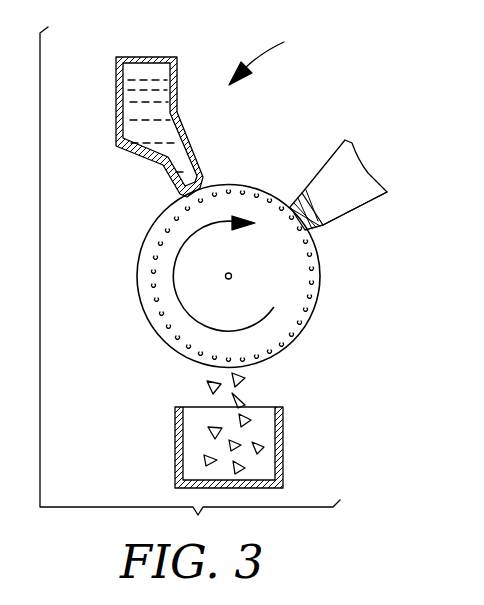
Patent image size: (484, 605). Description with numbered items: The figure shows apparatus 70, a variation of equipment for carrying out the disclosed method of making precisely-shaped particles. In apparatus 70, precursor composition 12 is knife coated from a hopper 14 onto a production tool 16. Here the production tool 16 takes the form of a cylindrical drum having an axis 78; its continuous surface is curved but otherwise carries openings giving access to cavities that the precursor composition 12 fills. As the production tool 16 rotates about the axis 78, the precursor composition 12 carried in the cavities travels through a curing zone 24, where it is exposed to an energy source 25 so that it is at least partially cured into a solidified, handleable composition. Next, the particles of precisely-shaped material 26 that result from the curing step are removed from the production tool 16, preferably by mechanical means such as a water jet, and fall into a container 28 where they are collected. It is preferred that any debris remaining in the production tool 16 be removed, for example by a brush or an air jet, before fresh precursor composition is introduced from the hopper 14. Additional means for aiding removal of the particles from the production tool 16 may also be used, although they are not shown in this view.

The precursor composition 12 is at (142, 72).
The hopper 14 is at (116, 79).
The production tool 16 is at (300, 308).
The curing zone 24 is at (354, 96).
The energy source 25 is at (362, 190).
The particles of precisely-shaped material 26 is at (244, 378).
The container 28 is at (283, 440).
The apparatus 70 is at (271, 55).
The axis 78 is at (232, 275).